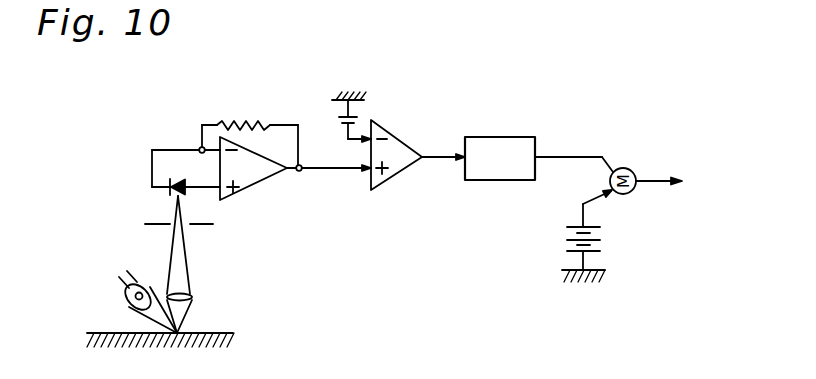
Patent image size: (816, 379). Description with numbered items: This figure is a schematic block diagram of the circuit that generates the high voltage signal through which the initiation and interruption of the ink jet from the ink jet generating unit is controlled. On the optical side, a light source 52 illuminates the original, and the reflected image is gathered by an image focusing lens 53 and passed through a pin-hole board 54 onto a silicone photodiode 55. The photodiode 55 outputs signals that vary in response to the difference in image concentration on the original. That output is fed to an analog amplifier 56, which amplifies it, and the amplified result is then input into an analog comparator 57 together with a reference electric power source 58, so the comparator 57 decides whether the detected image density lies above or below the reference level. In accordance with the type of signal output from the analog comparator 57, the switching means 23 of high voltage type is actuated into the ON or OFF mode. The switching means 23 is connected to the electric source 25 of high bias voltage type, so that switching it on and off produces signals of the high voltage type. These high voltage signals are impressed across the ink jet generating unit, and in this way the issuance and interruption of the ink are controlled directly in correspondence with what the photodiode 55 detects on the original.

The switching means of high voltage type 23 is at (510, 143).
The electric source of high bias voltage type 25 is at (601, 240).
The light source 52 is at (125, 300).
The image focusing lens 53 is at (194, 297).
The pin-hole board 54 is at (197, 227).
The silicone photodiode 55 is at (167, 190).
The analog amplifier 56 is at (265, 183).
The analog comparator 57 is at (395, 175).
The reference electric power source 58 is at (355, 112).